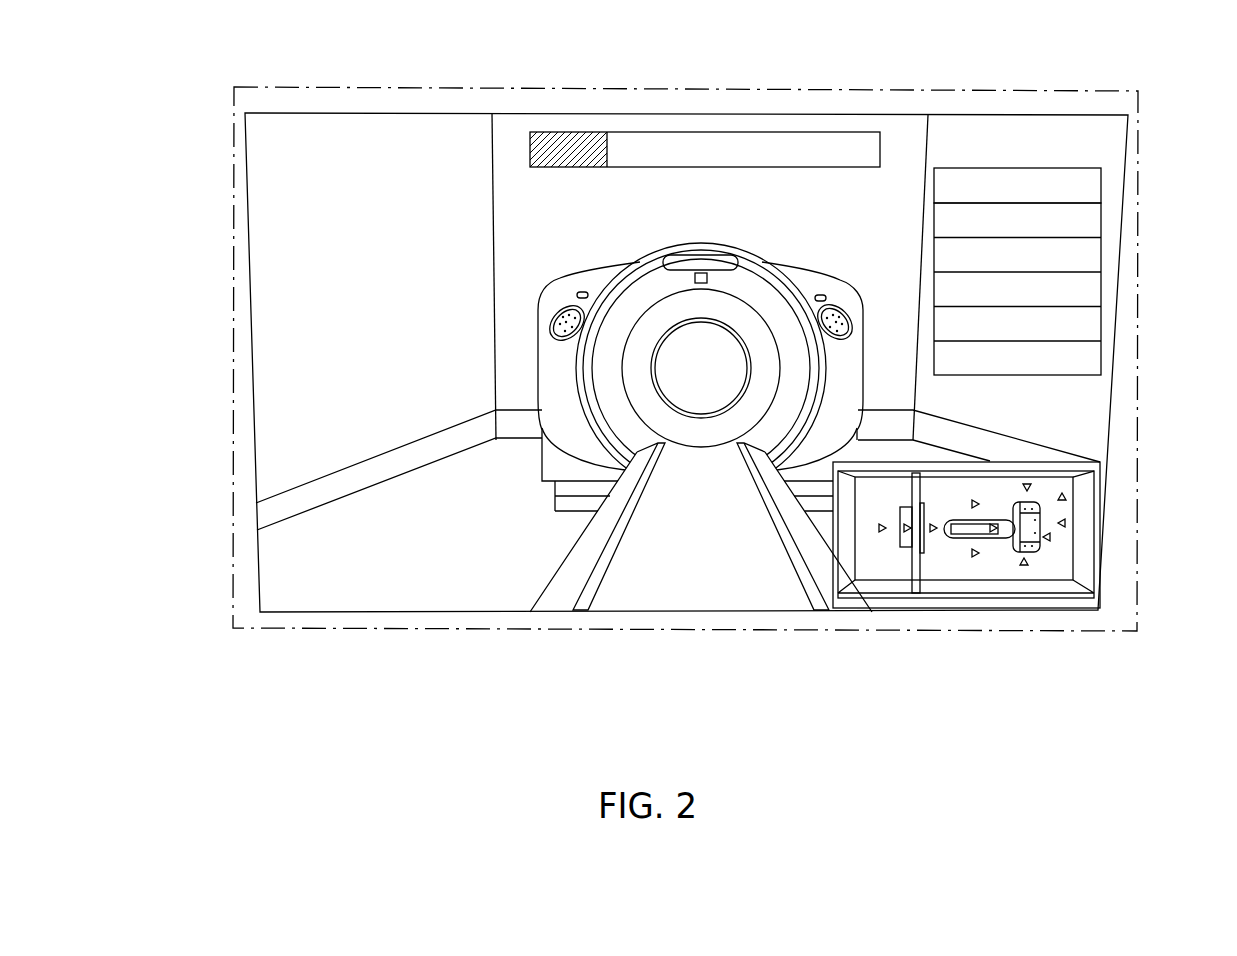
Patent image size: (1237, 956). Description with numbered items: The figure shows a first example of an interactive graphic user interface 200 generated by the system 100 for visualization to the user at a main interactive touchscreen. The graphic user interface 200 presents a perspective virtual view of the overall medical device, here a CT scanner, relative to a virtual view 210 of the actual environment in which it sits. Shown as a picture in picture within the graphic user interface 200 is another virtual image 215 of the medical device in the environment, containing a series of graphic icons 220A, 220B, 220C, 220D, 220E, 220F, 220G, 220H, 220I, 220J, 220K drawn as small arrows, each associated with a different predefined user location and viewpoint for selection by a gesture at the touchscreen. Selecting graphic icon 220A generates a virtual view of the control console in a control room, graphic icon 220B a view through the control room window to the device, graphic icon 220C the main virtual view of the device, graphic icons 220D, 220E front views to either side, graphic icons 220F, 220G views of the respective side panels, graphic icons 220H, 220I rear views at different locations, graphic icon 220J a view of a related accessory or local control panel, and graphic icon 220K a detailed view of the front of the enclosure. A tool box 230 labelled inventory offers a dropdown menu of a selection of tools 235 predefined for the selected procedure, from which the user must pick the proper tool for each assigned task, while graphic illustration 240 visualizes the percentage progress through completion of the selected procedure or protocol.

The graphic user interface 200 is at (224, 250).
The virtual view of the actual environment 210 is at (368, 267).
The system 100 is at (604, 255).
The graphic illustration of progress 240 is at (704, 168).
The tool box 230 is at (1047, 226).
The selection of tools 235 is at (928, 371).
The virtual image 215 is at (1078, 454).
The graphic icon 220A is at (876, 539).
The graphic icon 220B is at (902, 545).
The graphic icon 220C is at (934, 545).
The graphic icon 220D is at (975, 565).
The graphic icon 220E is at (976, 491).
The graphic icon 220F is at (1029, 475).
The graphic icon 220G is at (1032, 571).
The graphic icon 220H is at (1058, 546).
The graphic icon 220I is at (1073, 520).
The graphic icon 220J is at (1071, 489).
The graphic icon 220K is at (997, 545).